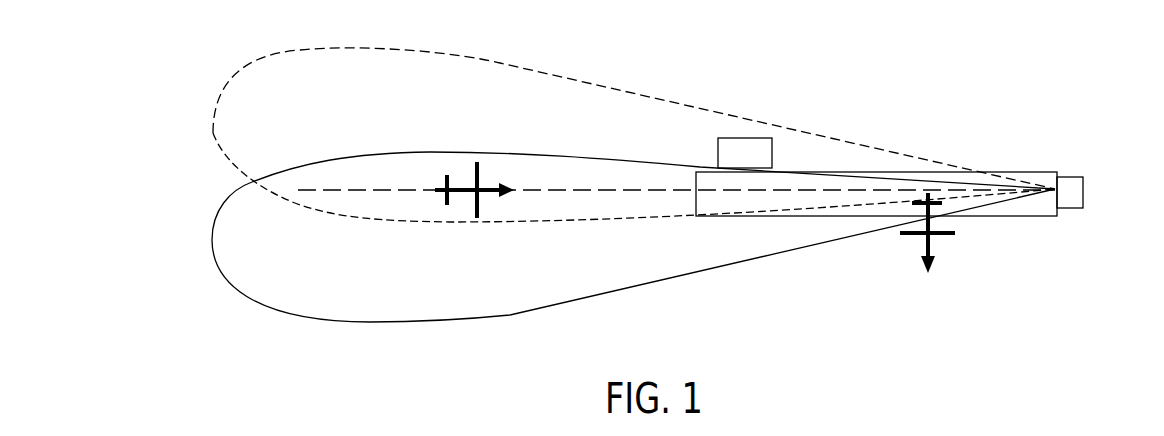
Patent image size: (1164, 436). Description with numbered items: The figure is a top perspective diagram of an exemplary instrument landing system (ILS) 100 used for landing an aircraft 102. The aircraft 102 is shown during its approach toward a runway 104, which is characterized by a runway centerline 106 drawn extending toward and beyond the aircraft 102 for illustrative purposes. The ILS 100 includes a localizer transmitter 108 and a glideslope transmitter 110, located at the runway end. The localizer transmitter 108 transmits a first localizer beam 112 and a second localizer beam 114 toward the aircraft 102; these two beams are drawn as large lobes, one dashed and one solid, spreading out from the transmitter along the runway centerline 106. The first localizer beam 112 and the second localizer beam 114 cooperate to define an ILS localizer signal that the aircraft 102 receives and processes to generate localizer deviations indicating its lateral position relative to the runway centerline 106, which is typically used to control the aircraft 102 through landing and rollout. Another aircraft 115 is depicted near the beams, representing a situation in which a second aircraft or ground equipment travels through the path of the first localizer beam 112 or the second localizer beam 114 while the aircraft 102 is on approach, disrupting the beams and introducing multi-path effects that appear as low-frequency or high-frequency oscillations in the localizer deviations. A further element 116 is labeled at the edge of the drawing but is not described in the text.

The instrument landing system 100 is at (876, 98).
The aircraft 102 is at (465, 207).
The runway 104 is at (1015, 172).
The runway centerline 106 is at (722, 190).
The localizer transmitter 108 is at (1083, 178).
The glideslope transmitter 110 is at (746, 138).
The first localizer beam 112 is at (213, 138).
The second localizer beam 114 is at (212, 240).
The another aircraft 115 is at (932, 244).
The additional element 116 is at (205, 435).